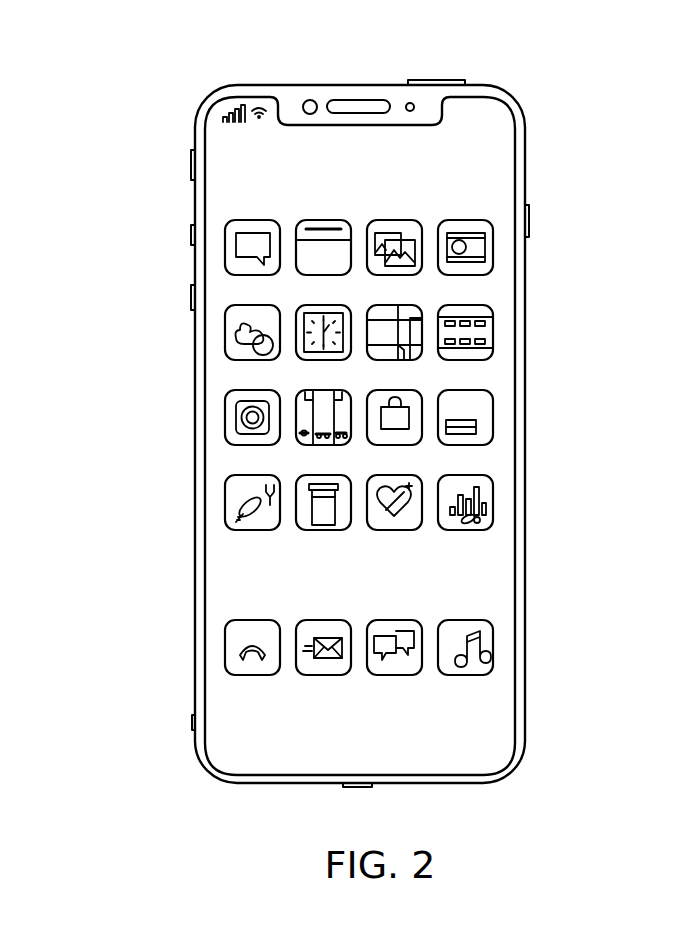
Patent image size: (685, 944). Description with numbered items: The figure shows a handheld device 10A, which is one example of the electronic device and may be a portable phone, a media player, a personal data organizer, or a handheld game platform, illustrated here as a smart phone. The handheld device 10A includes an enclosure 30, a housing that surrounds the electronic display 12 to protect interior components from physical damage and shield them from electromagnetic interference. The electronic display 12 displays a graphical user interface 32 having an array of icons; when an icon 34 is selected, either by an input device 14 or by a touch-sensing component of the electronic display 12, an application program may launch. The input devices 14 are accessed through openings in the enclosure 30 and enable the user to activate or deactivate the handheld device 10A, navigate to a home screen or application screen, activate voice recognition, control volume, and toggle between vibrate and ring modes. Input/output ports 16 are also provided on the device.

The handheld device 10A is at (180, 72).
The electronic display 12 is at (517, 560).
The input devices 14 is at (438, 81).
The input/output (I/O) ports 16 is at (245, 785).
The enclosure 30 is at (527, 165).
The graphical user interface (GUI) 32 is at (497, 370).
The icon 34 is at (396, 530).